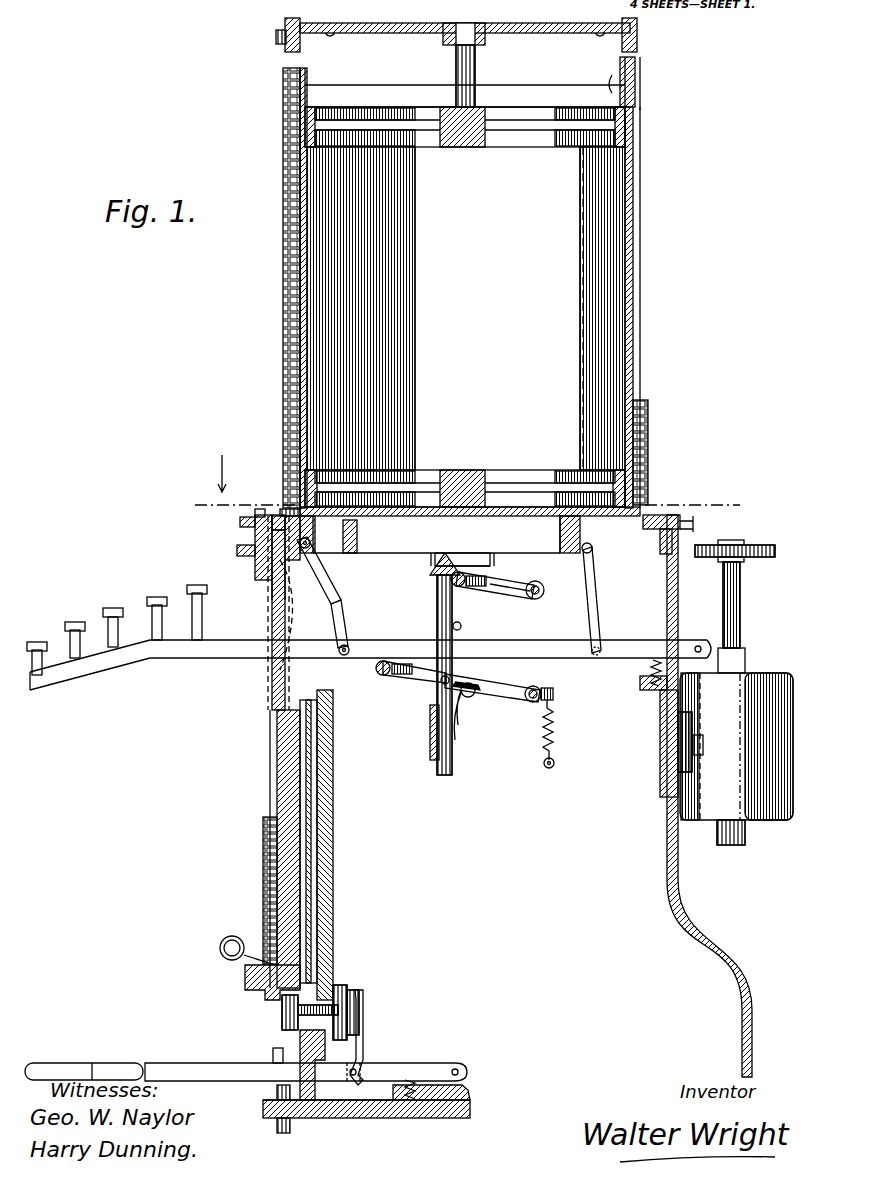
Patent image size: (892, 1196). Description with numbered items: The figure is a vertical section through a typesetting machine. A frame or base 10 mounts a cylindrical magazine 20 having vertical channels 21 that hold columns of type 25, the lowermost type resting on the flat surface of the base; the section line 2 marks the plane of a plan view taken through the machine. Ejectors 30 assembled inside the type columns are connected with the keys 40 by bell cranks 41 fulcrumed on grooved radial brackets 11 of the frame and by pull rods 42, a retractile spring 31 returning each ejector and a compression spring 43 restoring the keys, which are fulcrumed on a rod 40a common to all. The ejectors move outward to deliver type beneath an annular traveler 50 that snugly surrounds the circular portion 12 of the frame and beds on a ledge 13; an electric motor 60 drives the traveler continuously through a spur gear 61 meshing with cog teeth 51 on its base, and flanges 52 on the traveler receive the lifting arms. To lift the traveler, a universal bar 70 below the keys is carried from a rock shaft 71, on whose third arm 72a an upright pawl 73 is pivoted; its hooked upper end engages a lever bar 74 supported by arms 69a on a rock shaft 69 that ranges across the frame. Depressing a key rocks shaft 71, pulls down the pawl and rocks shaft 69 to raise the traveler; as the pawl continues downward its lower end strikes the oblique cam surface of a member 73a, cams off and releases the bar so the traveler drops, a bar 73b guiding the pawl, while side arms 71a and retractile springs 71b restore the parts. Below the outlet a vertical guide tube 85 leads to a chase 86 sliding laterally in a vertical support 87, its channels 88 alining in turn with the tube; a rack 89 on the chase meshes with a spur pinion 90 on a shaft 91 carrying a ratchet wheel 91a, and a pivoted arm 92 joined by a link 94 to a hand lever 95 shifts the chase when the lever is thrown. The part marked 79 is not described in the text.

The section line 2 is at (464, 488).
The frame 10 is at (526, 792).
The grooved radial brackets 11 is at (578, 560).
The circular portion 12 is at (658, 553).
The ledge 13 is at (252, 565).
The magazine 20 is at (466, 308).
The vertical channels 21 is at (640, 270).
The type 25 is at (283, 410).
The ejectors 30 is at (281, 501).
The retractile spring 31 is at (648, 483).
The keys 40 is at (150, 660).
The rod 40a is at (700, 645).
The bell cranks 41 is at (318, 572).
The pull rods 42 is at (339, 620).
The compression spring 43 is at (640, 683).
The traveler 50 is at (250, 509).
The cog teeth 51 is at (235, 548).
The flanges 52 is at (235, 522).
The electric motor 60 is at (726, 759).
The spur gear 61 is at (765, 560).
The rock shaft 69 is at (544, 594).
The arms 69a is at (513, 597).
The universal bar 70 is at (385, 676).
The rock shaft 71 is at (540, 685).
The side arms 71a is at (555, 690).
The retractile springs 71b is at (544, 738).
The third arm 72a is at (495, 695).
The upright pawl 73 is at (437, 610).
The member 73a is at (452, 742).
The bar 73b is at (461, 630).
The lever bar 74 is at (468, 592).
The block 79 is at (432, 572).
The vertical guide tube 85 is at (268, 608).
The chase 86 is at (277, 762).
The vertical support 87 is at (333, 840).
The channels 88 is at (272, 792).
The rack 89 is at (280, 995).
The spur pinion 90 is at (282, 1022).
The shaft 91 is at (336, 982).
The ratchet wheel 91a is at (340, 1040).
The pivoted arm 92 is at (360, 1000).
The link 94 is at (365, 1030).
The hand lever 95 is at (190, 1063).